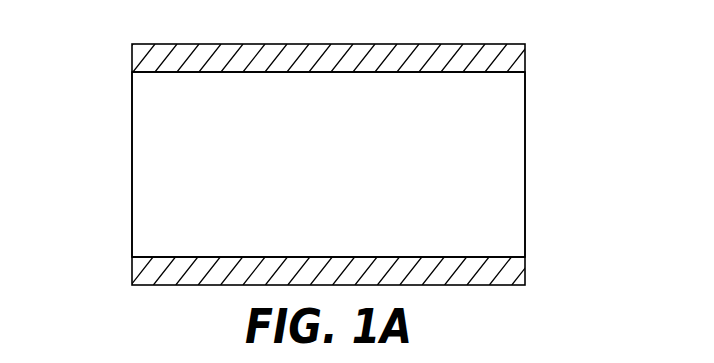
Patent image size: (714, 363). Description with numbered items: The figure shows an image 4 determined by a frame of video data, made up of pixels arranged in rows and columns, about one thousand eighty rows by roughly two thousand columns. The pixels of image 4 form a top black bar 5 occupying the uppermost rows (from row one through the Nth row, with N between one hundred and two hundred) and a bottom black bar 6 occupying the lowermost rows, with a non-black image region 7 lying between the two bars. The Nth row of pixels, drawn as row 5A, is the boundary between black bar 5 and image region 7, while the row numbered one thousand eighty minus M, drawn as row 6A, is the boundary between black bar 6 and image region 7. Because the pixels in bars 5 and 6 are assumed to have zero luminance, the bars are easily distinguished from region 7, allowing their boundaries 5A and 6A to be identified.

The image 4 is at (128, 152).
The top black bar 5 is at (502, 44).
The row 5A is at (507, 72).
The non-black image region 7 is at (490, 155).
The row 6A is at (502, 258).
The bottom black bar 6 is at (507, 286).